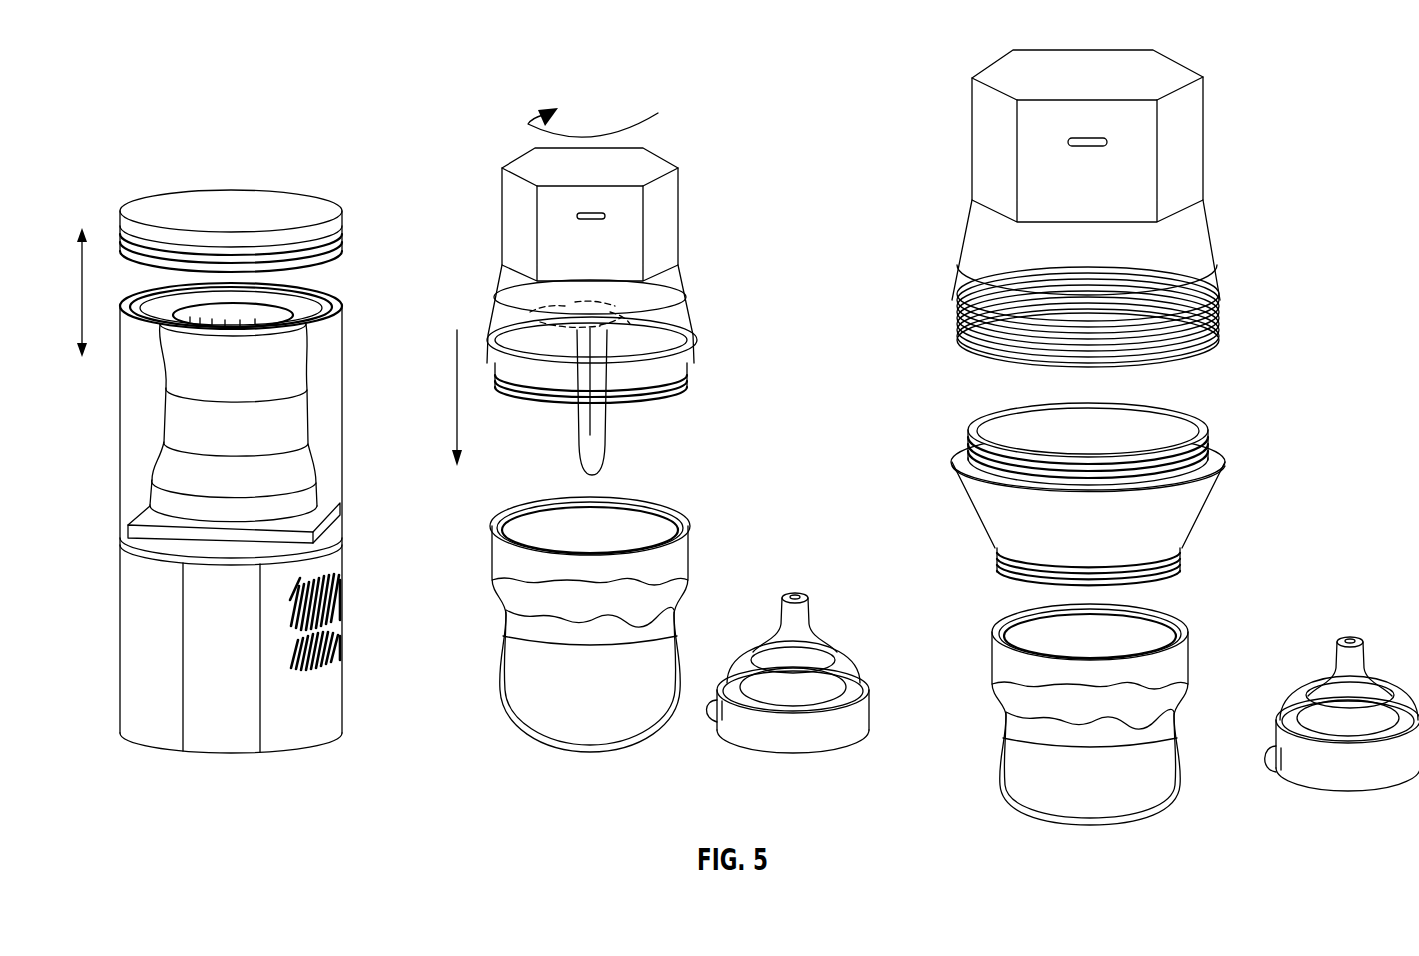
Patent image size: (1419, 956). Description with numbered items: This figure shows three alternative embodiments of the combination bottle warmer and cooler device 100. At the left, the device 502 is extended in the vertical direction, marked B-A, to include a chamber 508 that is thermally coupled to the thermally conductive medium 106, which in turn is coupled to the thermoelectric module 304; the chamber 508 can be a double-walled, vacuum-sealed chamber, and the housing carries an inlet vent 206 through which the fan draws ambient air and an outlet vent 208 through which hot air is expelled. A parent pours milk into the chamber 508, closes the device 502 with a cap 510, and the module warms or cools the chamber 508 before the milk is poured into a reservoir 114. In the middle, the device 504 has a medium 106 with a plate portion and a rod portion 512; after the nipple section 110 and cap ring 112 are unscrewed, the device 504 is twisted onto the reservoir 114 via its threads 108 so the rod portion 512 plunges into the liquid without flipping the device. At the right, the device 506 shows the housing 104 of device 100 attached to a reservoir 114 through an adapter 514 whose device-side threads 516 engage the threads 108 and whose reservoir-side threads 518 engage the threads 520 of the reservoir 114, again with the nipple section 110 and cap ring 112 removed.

The combination bottle warmer and cooler device 100 is at (1109, 199).
The housing 104 is at (972, 152).
The thermally conductive medium 106 is at (308, 492).
The threads 108 is at (689, 379).
The nipple section 110 is at (820, 643).
The cap ring 112 is at (876, 704).
The reservoir 114 is at (693, 551).
The inlet vent 206 is at (343, 633).
The outlet vent 208 is at (343, 583).
The thermoelectric module 304 is at (337, 513).
The device 502 is at (350, 100).
The device 504 is at (700, 120).
The device 506 is at (1202, 28).
The chamber 508 is at (308, 345).
The cap 510 is at (282, 207).
The rod portion 512 is at (603, 445).
The adapter 514 is at (1213, 487).
The device-side threads 516 is at (1210, 443).
The reservoir-side threads 518 is at (995, 558).
The threads 520 is at (1163, 614).